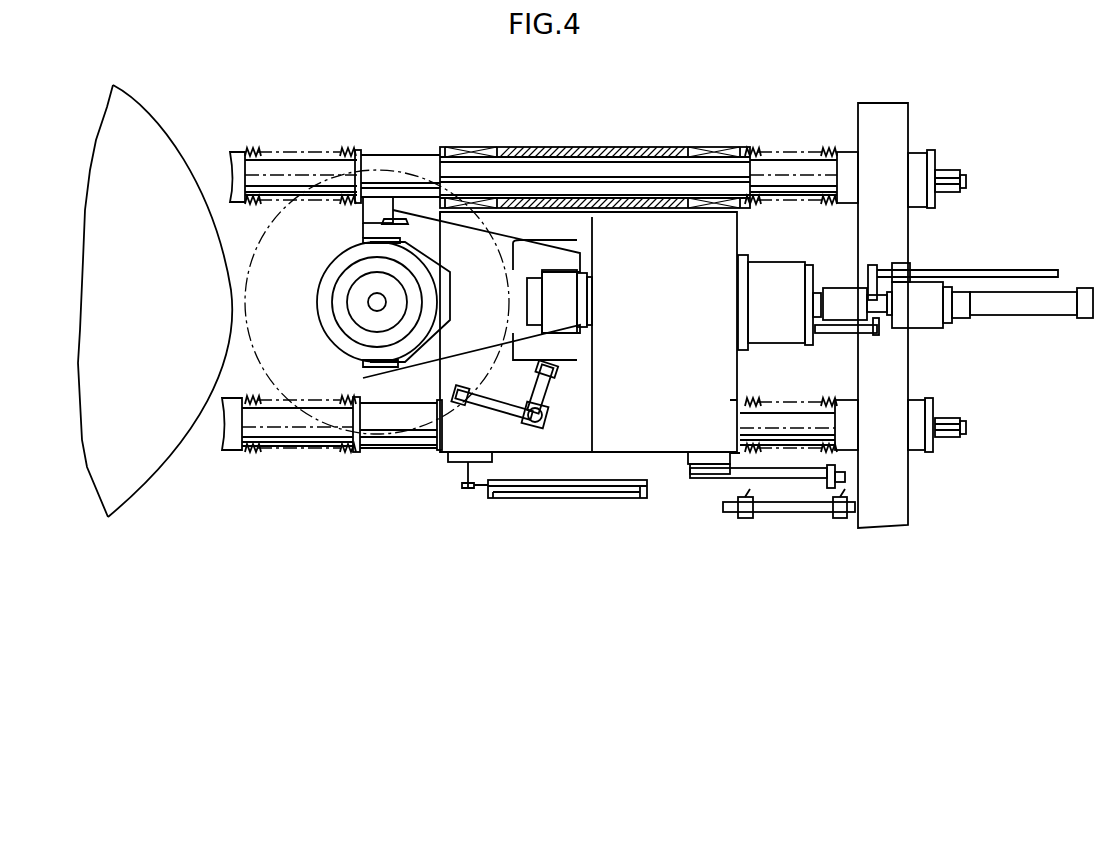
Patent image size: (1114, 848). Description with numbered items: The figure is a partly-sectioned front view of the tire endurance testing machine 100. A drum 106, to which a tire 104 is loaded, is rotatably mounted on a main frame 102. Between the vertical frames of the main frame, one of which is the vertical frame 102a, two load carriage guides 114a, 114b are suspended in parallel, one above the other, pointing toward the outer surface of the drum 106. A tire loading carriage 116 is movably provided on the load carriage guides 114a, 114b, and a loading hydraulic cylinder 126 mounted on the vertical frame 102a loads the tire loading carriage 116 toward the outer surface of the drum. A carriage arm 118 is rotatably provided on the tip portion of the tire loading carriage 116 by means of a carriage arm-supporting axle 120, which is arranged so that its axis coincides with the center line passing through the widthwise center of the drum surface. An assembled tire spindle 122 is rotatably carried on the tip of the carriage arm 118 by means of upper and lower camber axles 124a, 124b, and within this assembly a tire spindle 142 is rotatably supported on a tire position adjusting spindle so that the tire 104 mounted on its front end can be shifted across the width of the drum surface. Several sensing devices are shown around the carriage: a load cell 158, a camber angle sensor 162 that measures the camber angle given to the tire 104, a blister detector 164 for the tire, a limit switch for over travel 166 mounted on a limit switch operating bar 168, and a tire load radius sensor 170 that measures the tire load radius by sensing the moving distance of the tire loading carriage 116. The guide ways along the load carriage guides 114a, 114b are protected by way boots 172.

The tire endurance testing machine 100 is at (493, 89).
The main frame 102 is at (915, 125).
The vertical frame 102a is at (880, 112).
The tire 104 is at (422, 418).
The drum 106 is at (176, 148).
The load carriage guide 114a is at (645, 180).
The load carriage guide 114b is at (768, 425).
The tire loading carriage 116 is at (670, 440).
The carriage arm 118 is at (485, 262).
The carriage arm-supporting axle 120 is at (590, 303).
The assembled tire spindle 122 is at (312, 296).
The camber axle 124a is at (368, 240).
The camber axle 124b is at (363, 367).
The loading hydraulic cylinder 126 is at (1020, 316).
The tire spindle 142 is at (400, 302).
The load cell 158 is at (838, 290).
The camber angle sensor 162 is at (377, 198).
The blister detector 164 is at (562, 372).
The limit switch for over travel 166 is at (746, 518).
The limit switch operating bar 168 is at (795, 506).
The tire load radius sensor 170 is at (576, 485).
The way boot 172 is at (252, 151).